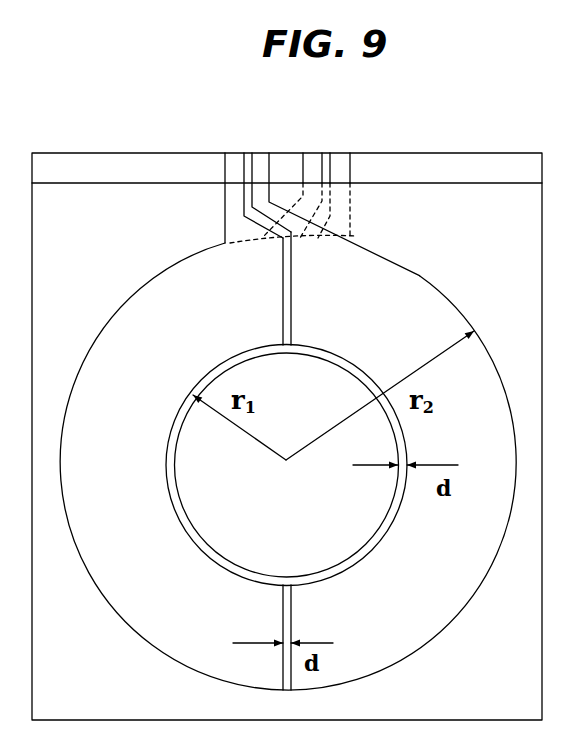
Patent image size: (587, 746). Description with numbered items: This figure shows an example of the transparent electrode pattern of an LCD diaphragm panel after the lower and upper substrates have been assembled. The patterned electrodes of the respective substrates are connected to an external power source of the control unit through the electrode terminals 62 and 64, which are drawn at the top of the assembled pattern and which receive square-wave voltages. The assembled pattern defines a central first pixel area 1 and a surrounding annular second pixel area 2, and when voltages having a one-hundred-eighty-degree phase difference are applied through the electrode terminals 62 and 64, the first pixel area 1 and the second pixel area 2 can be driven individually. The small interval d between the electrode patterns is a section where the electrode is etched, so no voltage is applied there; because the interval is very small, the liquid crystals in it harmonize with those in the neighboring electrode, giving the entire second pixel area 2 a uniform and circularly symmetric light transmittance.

The electrode terminal 62 is at (228, 140).
The electrode terminal 64 is at (343, 140).
The region I (inner electrode region) 1 is at (286, 465).
The region II (outer electrode region) 2 is at (288, 466).